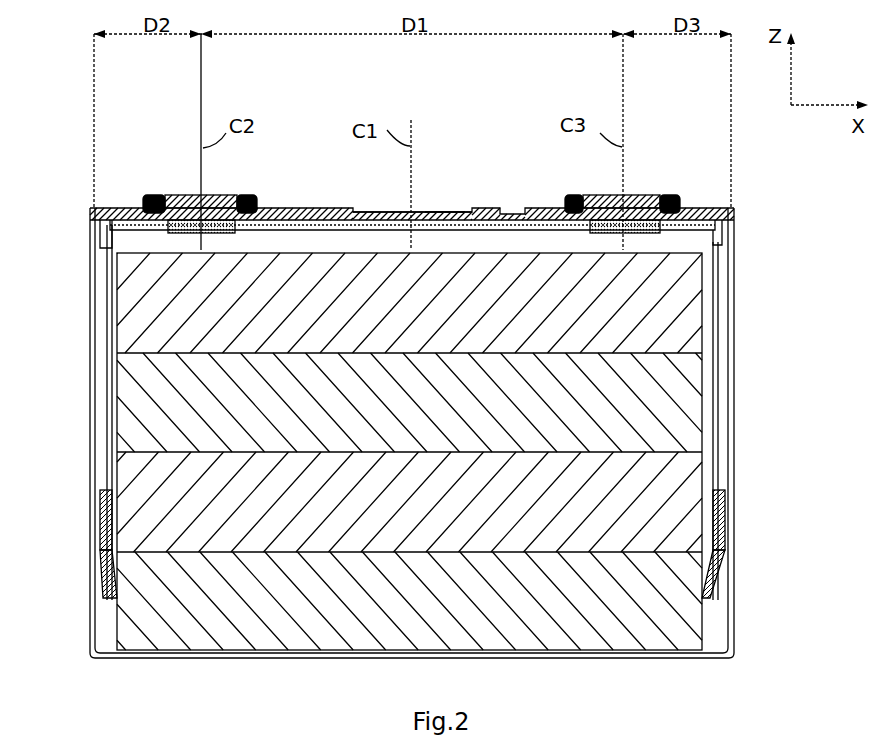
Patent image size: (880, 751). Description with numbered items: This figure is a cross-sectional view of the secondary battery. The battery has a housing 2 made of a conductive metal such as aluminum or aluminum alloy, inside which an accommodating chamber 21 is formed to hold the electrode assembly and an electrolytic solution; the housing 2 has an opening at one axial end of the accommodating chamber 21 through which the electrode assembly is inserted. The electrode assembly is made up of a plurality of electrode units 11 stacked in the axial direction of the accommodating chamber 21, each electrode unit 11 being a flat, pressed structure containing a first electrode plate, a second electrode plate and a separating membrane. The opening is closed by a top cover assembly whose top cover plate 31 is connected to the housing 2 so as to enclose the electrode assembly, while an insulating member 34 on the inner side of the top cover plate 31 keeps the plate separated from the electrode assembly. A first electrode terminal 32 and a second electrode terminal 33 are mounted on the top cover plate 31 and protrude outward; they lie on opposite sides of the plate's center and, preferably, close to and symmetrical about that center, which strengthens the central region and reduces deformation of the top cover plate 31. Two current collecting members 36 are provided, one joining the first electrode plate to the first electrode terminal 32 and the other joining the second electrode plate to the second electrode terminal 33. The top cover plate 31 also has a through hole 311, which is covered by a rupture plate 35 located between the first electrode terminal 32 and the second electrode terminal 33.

The housing 2 is at (732, 425).
The electrode unit 11 is at (553, 635).
The accommodating chamber 21 is at (718, 593).
The top cover plate 31 is at (318, 207).
The through hole 311 is at (376, 210).
The first electrode terminal 32 is at (182, 196).
The second electrode terminal 33 is at (637, 196).
The insulating member 34 is at (490, 230).
The rupture plate 35 is at (440, 211).
The current collecting member 36 is at (108, 377).